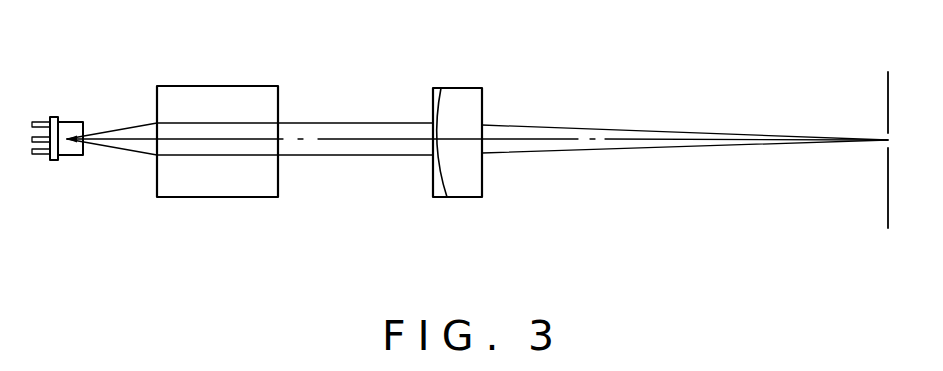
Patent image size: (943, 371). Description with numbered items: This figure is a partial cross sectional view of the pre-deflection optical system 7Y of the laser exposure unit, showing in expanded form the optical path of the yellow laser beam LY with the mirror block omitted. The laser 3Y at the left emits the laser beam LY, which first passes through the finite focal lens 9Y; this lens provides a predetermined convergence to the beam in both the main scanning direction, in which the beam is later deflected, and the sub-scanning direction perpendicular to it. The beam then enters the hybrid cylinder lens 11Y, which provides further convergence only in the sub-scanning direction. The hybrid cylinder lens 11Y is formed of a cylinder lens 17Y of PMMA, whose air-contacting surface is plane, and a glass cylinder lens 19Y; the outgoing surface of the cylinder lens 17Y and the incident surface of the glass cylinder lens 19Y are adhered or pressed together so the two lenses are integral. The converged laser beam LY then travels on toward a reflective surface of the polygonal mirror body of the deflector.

The laser 3Y is at (55, 120).
The finite focal lens 9Y is at (222, 92).
The pre-deflection optical system 7Y is at (364, 163).
The hybrid cylinder lens 11Y is at (466, 139).
The cylinder lens 17Y is at (440, 92).
The glass cylinder lens 19Y is at (471, 95).
The laser beam LY is at (767, 135).